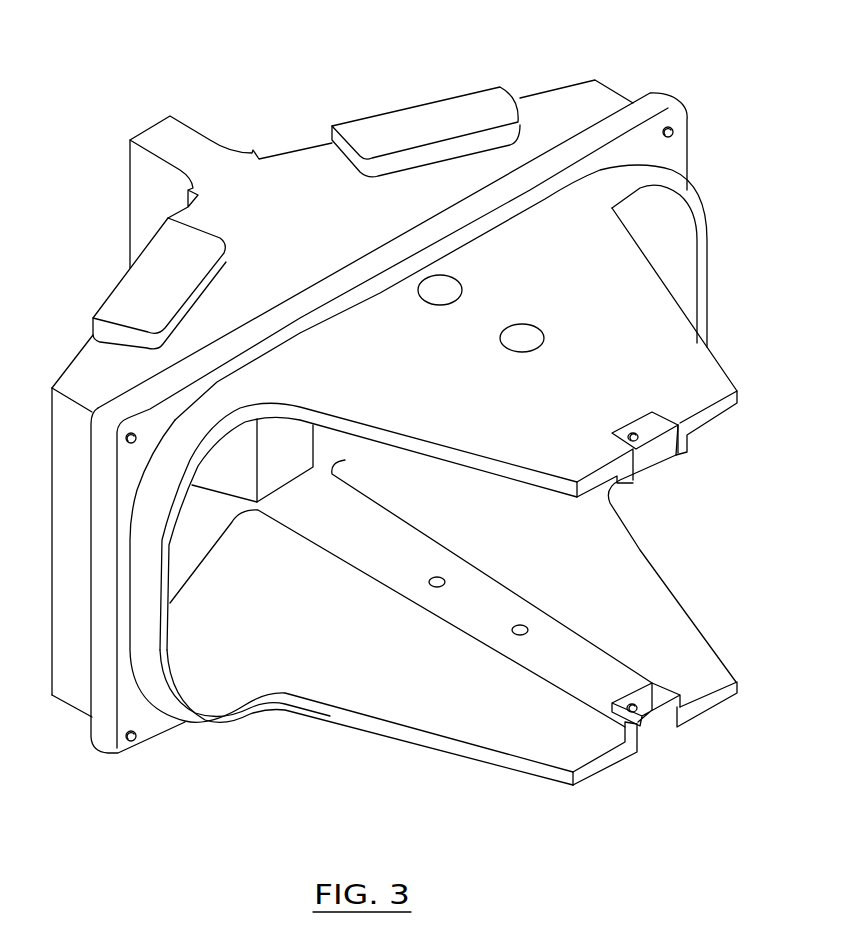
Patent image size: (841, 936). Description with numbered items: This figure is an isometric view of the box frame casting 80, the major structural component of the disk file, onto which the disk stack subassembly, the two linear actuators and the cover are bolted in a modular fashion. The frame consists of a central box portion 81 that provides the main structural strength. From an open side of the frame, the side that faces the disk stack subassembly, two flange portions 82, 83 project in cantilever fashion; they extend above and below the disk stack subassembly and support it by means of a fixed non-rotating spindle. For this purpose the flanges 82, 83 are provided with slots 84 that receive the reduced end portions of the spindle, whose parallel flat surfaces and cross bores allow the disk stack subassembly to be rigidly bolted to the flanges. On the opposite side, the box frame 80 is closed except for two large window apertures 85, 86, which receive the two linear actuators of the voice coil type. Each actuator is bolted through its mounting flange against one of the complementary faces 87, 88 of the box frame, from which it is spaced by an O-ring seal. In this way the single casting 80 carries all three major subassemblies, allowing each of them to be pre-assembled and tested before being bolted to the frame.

The box frame casting 80 is at (690, 189).
The central box portion 81 is at (614, 92).
The flange portion 82 is at (757, 340).
The flange portion 83 is at (530, 773).
The slot 84 is at (645, 452).
The window aperture 85 is at (187, 507).
The window aperture 86 is at (330, 442).
The complementary face 87 is at (118, 288).
The complementary face 88 is at (450, 98).